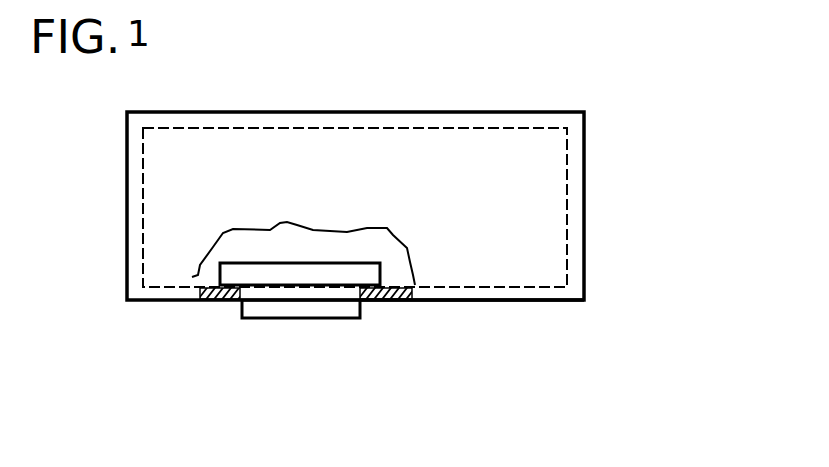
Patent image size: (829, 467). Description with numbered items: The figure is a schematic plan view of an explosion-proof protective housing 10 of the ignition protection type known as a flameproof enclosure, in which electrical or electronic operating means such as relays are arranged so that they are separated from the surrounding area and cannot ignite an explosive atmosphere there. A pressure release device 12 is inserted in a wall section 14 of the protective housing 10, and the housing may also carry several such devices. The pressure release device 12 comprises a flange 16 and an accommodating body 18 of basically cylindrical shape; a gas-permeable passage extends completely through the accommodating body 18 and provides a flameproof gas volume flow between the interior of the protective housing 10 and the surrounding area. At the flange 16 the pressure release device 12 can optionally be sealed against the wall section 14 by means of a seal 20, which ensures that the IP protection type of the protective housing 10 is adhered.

The protective housing 10 is at (556, 92).
The pressure release device 12 is at (268, 338).
The wall section 14 is at (388, 300).
The flange 16 is at (300, 272).
The accommodating body 18 is at (322, 307).
The seal 20 is at (222, 297).